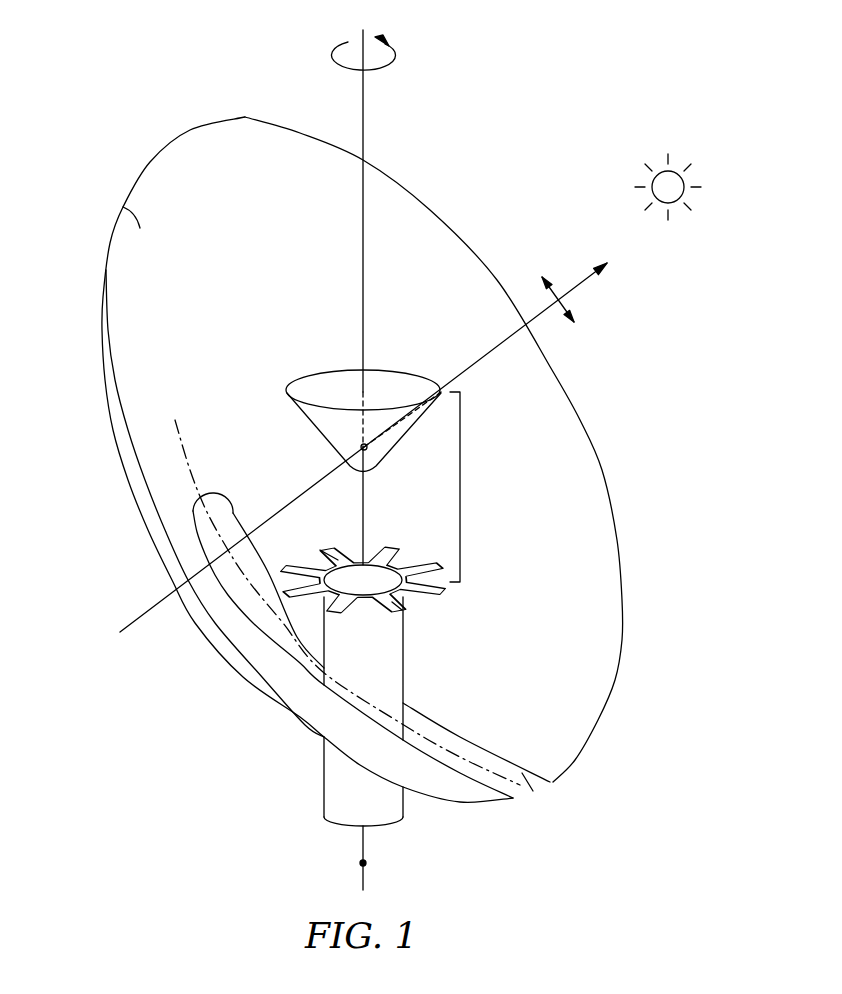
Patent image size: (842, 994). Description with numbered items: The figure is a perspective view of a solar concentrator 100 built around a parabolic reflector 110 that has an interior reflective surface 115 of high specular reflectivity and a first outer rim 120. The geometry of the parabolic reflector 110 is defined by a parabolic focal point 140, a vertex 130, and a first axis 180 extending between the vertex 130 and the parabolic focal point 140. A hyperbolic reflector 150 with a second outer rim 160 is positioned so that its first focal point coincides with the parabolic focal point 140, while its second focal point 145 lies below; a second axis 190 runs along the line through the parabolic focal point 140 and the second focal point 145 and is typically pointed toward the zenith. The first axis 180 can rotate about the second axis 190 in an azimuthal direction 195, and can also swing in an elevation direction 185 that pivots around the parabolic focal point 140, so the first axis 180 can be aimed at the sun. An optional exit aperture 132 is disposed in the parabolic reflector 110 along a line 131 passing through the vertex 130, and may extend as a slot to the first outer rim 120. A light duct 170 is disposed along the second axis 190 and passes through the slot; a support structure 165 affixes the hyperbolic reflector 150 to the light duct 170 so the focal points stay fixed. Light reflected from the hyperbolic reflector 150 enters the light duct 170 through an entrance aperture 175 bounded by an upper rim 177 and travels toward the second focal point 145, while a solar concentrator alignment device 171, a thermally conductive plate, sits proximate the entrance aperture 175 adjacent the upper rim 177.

The solar concentrator 100 is at (118, 50).
The parabolic reflector 110 is at (103, 398).
The interior reflective surface 115 is at (123, 207).
The first outer rim 120 is at (150, 165).
The vertex 130 is at (222, 593).
The line 131 is at (185, 453).
The exit aperture 132 is at (525, 777).
The parabolic focal point 140 is at (368, 450).
The second focal point 145 is at (368, 863).
The hyperbolic reflector 150 is at (316, 437).
The second outer rim 160 is at (400, 375).
The support structure 165 is at (465, 557).
The light duct 170 is at (322, 786).
The solar concentrator alignment device 171 is at (395, 604).
The entrance aperture 175 is at (382, 573).
The upper rim 177 is at (340, 558).
The first axis 180 is at (588, 276).
The elevation direction 185 is at (570, 306).
The second axis 190 is at (364, 118).
The azimuthal direction 195 is at (336, 52).